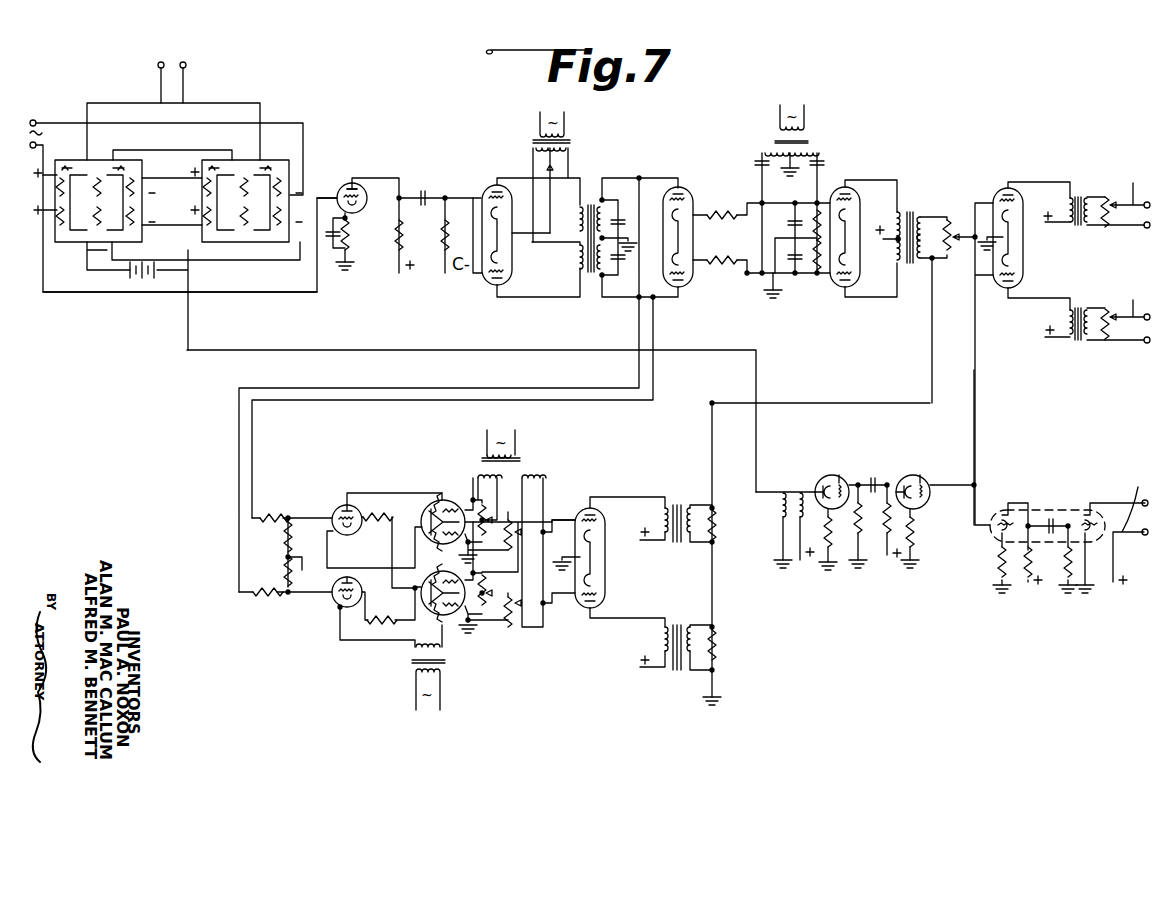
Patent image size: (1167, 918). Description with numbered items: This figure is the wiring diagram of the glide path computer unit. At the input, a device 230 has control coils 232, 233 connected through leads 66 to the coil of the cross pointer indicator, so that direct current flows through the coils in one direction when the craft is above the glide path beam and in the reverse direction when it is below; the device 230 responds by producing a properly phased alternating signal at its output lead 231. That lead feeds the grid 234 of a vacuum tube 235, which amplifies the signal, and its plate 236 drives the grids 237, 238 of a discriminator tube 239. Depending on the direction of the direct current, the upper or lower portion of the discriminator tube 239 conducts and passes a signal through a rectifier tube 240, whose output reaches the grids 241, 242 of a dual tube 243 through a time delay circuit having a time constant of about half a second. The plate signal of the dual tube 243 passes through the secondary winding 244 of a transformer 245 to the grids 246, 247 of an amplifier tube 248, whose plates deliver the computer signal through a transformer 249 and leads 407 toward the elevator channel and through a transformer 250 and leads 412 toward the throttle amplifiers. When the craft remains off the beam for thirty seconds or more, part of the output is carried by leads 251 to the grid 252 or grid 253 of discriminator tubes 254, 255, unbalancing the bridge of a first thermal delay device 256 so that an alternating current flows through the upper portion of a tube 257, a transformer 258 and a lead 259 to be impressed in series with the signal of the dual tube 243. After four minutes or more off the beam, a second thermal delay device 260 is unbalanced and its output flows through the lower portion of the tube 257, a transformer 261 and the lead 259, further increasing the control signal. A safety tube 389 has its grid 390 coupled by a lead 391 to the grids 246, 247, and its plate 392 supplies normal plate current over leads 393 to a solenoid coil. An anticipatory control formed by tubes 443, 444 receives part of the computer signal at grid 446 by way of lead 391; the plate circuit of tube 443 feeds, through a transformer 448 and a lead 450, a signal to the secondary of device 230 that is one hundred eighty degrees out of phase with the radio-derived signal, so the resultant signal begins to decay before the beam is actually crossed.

The leads 66 is at (161, 76).
The device 230 is at (193, 146).
The output lead 231 is at (237, 293).
The control coil 232 is at (102, 165).
The control coil 233 is at (243, 165).
The grid 234 is at (343, 188).
The vacuum tube 235 is at (358, 210).
The plate 236 is at (359, 186).
The grid 237 is at (482, 188).
The grid 238 is at (492, 283).
The discriminator tube 239 is at (515, 256).
The rectifier tube 240 is at (693, 230).
The grid 241 is at (840, 192).
The grid 242 is at (838, 284).
The dual tube 243 is at (860, 260).
The secondary winding 244 is at (927, 220).
The transformer 245 is at (923, 286).
The grid 246 is at (995, 197).
The grid 247 is at (1001, 290).
The amplifier tube 248 is at (1023, 250).
The transformer 249 is at (1101, 186).
The transformer 250 is at (1101, 296).
The leads 251 is at (450, 398).
The grid 252 is at (332, 513).
The grid 253 is at (335, 606).
The discriminator tube 254 is at (362, 528).
The discriminator tube 255 is at (340, 577).
The first thermal delay device 256 is at (448, 494).
The tube 257 is at (605, 561).
The transformer 258 is at (701, 497).
The lead 259 is at (848, 403).
The second thermal delay device 260 is at (450, 610).
The transformer 261 is at (694, 624).
The tube 389 is at (1048, 560).
The grid 390 is at (995, 543).
The lead 391 is at (974, 405).
The plate 392 is at (1088, 507).
The leads 393 is at (1142, 482).
The leads 407 is at (1128, 197).
The leads 412 is at (1128, 309).
The tube 443 is at (837, 477).
The tube 444 is at (919, 476).
The grid 446 is at (953, 502).
The transformer 448 is at (812, 489).
The lead 450 is at (340, 348).